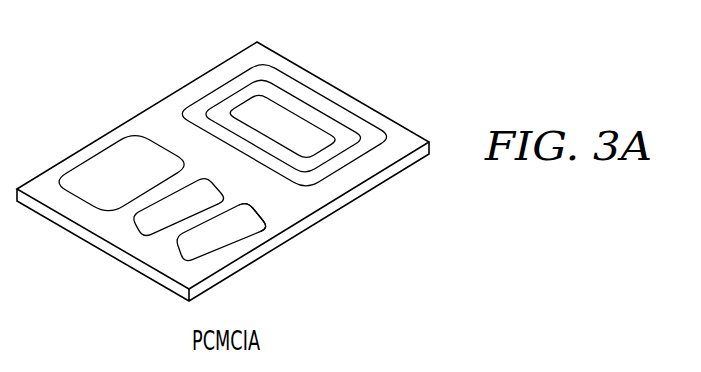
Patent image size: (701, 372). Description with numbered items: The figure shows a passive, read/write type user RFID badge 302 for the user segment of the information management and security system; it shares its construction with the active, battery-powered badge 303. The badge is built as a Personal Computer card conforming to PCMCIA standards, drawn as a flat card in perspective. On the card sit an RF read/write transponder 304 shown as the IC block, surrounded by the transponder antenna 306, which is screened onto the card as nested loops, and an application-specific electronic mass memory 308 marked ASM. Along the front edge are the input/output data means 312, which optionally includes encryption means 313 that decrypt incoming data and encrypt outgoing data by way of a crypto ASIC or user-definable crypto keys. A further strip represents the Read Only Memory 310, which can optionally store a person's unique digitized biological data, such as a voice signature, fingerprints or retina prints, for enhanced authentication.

The passive user RFID badge 302 is at (333, 82).
The active user RFID badge 303 is at (408, 135).
The RF read/write transponder 304 is at (248, 107).
The transponder antenna 306 is at (293, 75).
The application-specific electronic mass memory 308 is at (127, 148).
The read only memory 310 is at (151, 228).
The input/output data means 312 is at (190, 252).
The encryption means 313 is at (248, 217).